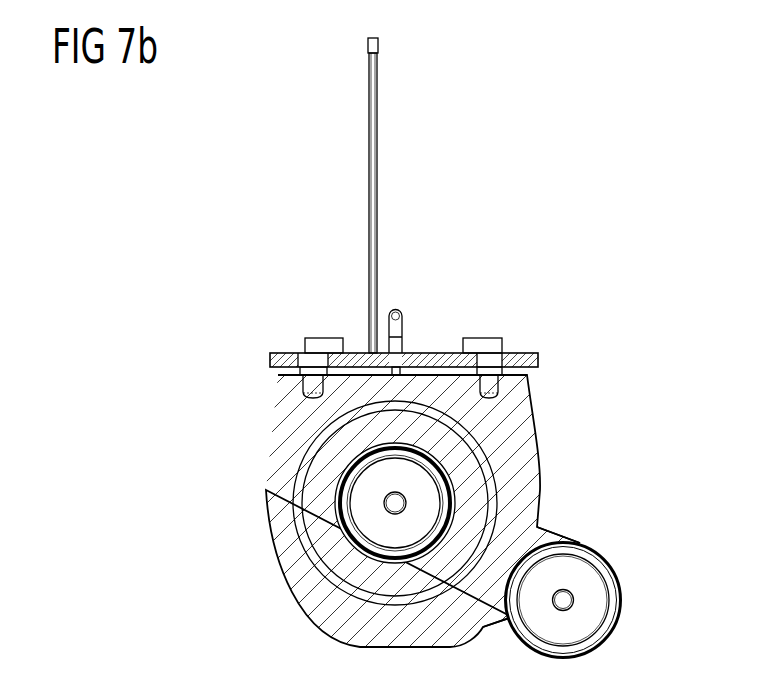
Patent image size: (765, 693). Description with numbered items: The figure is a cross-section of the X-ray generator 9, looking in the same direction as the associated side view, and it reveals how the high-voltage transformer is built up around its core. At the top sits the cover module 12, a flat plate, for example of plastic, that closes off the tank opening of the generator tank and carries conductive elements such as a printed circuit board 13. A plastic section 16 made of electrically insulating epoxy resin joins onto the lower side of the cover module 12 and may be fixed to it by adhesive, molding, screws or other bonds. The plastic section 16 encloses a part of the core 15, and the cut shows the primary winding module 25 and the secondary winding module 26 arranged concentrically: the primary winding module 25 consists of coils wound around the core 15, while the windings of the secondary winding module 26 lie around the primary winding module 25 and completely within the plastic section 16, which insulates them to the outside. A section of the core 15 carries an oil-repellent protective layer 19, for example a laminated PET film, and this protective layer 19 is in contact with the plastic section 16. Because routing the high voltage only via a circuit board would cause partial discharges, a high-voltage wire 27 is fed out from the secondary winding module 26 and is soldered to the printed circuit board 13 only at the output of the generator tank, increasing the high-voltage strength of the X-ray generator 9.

The X-ray generator 9 is at (499, 291).
The cover module 12 is at (285, 350).
The printed circuit board 13 is at (404, 322).
The core 15 is at (547, 538).
The plastic section 16 is at (513, 443).
The oil-repellent protective layer 19 is at (595, 550).
The primary winding module 25 is at (343, 480).
The secondary winding module 26 is at (297, 503).
The high-voltage wire 27 is at (380, 132).